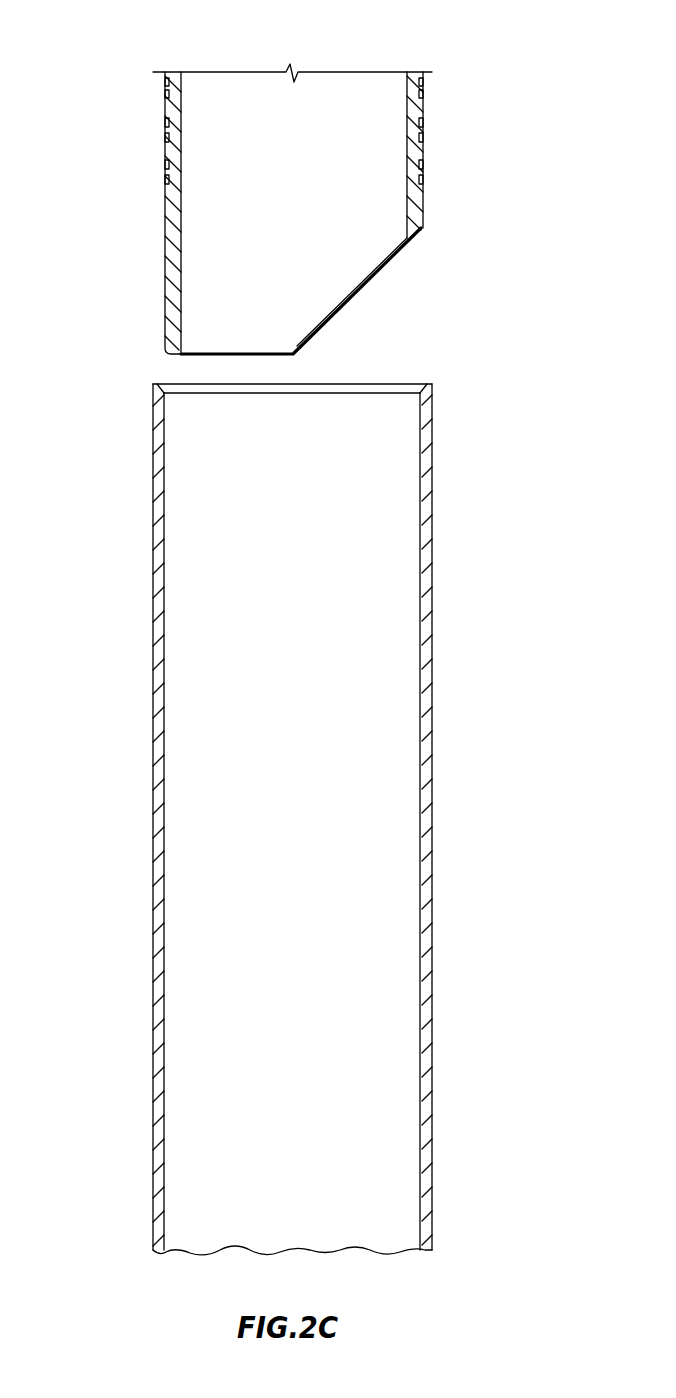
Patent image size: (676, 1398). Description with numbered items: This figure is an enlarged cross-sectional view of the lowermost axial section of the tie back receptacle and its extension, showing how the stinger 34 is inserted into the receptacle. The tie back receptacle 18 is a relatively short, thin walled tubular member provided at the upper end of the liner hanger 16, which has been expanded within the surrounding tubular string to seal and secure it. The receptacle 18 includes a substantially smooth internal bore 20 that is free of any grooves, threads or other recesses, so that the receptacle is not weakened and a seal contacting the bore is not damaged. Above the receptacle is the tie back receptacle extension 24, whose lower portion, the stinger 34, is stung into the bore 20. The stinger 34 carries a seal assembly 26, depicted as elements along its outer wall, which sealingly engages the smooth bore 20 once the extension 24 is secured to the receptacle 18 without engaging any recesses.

The liner hanger 16 is at (321, 794).
The tie back receptacle 18 is at (153, 545).
The internal bore 20 is at (418, 426).
The tie back receptacle extension 24 is at (310, 180).
The seal assembly 26 is at (450, 75).
The stinger 34 is at (162, 250).